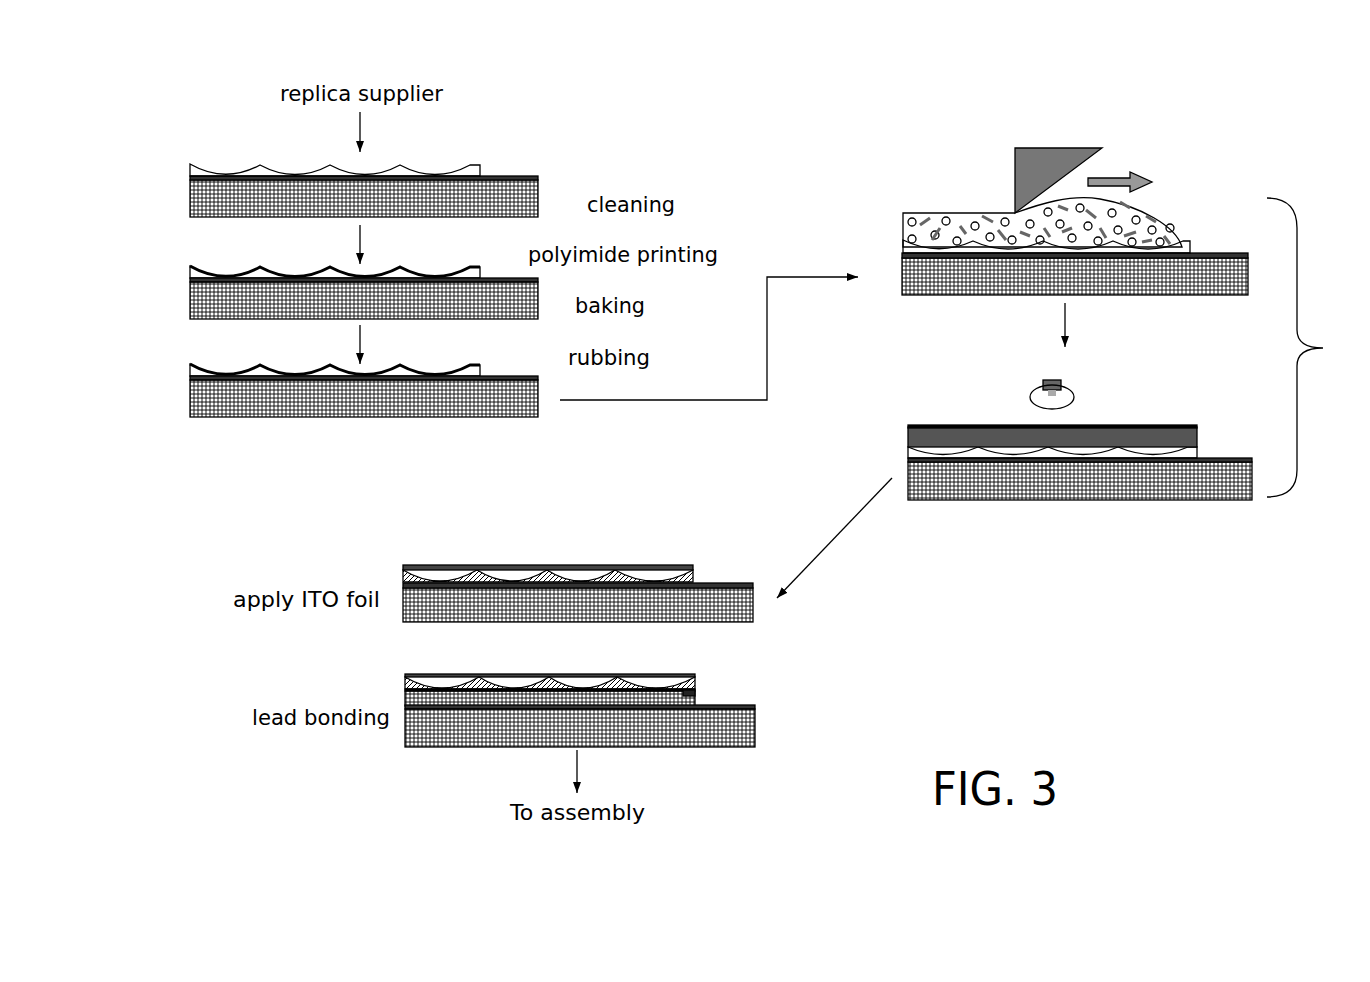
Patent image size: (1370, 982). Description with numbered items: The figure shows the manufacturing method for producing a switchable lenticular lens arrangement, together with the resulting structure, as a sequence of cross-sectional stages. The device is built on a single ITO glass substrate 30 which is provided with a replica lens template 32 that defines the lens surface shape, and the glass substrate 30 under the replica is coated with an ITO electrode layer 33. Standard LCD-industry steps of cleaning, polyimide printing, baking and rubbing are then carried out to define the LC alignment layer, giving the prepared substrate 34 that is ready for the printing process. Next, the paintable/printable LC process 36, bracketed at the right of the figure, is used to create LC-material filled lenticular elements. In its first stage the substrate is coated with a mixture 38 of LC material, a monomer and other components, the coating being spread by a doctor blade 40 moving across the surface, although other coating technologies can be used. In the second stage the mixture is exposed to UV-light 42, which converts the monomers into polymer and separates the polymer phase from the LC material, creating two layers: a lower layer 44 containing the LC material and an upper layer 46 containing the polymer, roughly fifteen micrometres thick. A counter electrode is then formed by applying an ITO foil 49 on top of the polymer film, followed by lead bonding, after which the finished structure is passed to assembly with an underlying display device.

The glass substrate 30 is at (188, 193).
The replica lens template 32 is at (214, 165).
The ITO electrode layer 33 is at (188, 178).
The substrate 34 is at (170, 362).
The paintable/printable LC process 36 is at (1313, 347).
The mixture 38 is at (1150, 205).
The doctor blade 40 is at (1022, 147).
The UV-light 42 is at (1100, 400).
The lower layer 44 is at (1200, 443).
The upper layer 46 is at (1180, 425).
The ITO foil 49 is at (460, 562).